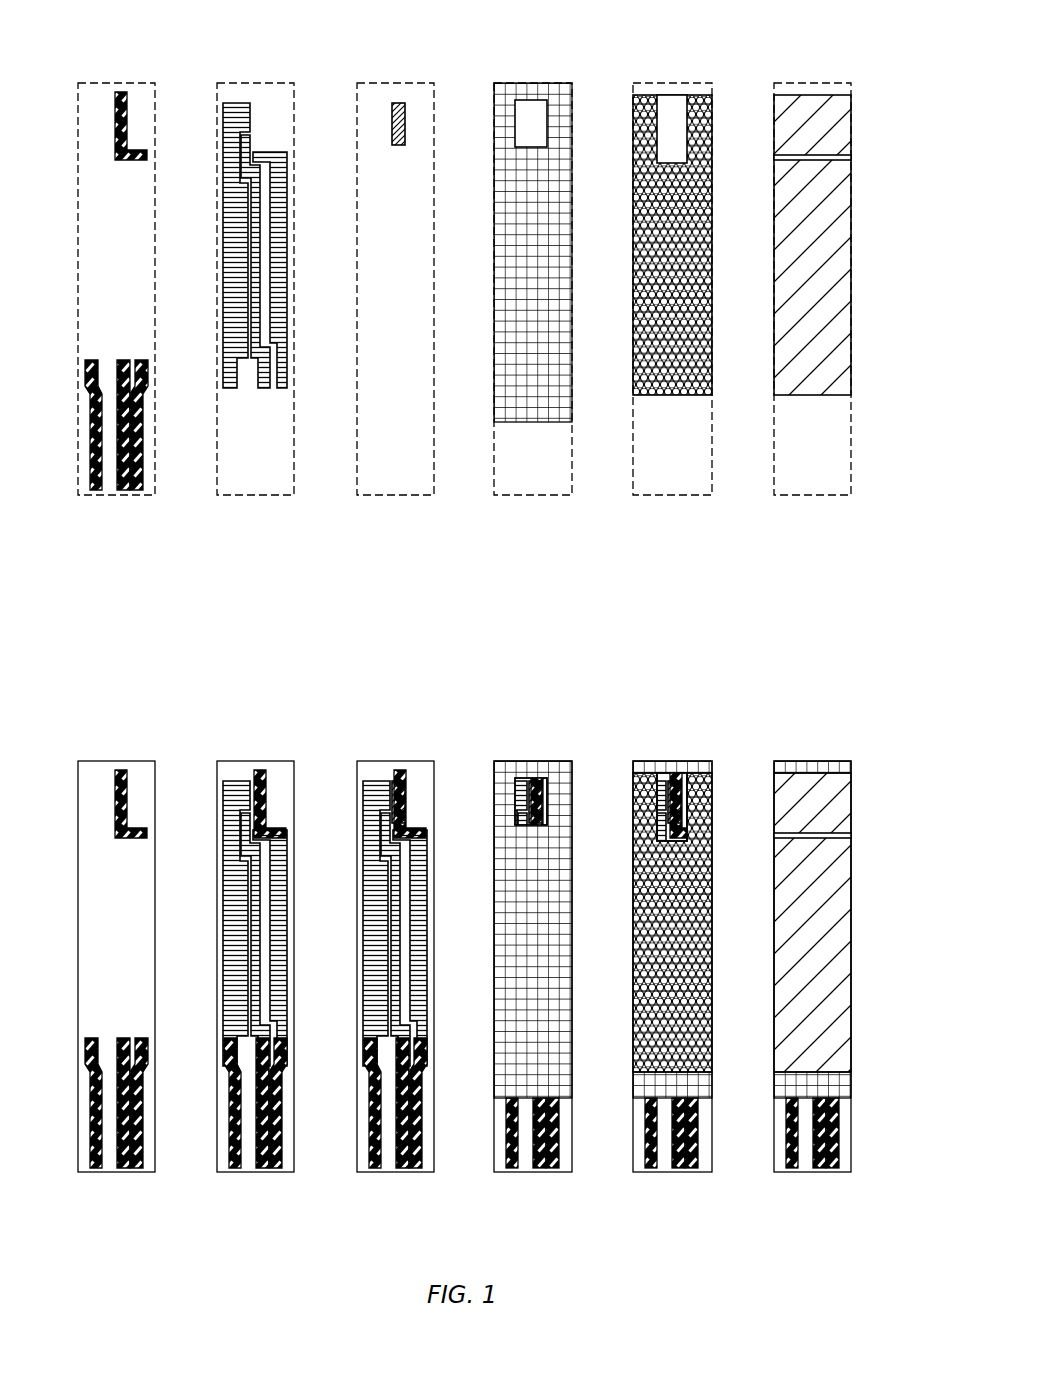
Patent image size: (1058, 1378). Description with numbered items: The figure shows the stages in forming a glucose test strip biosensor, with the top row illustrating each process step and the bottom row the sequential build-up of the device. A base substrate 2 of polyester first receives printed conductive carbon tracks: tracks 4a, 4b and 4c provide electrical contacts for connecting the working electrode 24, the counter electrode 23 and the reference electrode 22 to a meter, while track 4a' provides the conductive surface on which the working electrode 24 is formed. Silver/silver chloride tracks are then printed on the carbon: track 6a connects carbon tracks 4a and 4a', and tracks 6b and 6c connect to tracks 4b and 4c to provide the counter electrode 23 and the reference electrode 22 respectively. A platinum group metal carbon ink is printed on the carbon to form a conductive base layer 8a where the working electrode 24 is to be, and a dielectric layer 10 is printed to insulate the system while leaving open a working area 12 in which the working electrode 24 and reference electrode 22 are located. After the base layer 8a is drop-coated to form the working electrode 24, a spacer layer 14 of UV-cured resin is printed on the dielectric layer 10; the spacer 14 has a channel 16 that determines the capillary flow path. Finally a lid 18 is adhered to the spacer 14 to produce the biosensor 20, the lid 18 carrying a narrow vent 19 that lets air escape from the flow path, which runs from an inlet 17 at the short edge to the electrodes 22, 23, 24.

The base substrate 2 is at (92, 868).
The conductive track 4a is at (484, 790).
The conductive track 4b is at (122, 491).
The conductive track 4c is at (92, 489).
The conductive track 4a' is at (267, 432).
The track 6a is at (283, 160).
The track 6b is at (247, 143).
The track 6c is at (232, 108).
The conductive base layer 8a is at (398, 110).
The dielectric layer 10 is at (520, 92).
The working area 12 is at (540, 126).
The spacer layer 14 is at (704, 128).
The channel 16 is at (672, 138).
The inlet 17 is at (707, 45).
The lid 18 is at (840, 122).
The vent 19 is at (858, 157).
The biosensor 20 is at (866, 870).
The reference electrode 22 is at (660, 792).
The counter electrode 23 is at (661, 821).
The working electrode 24 is at (680, 790).